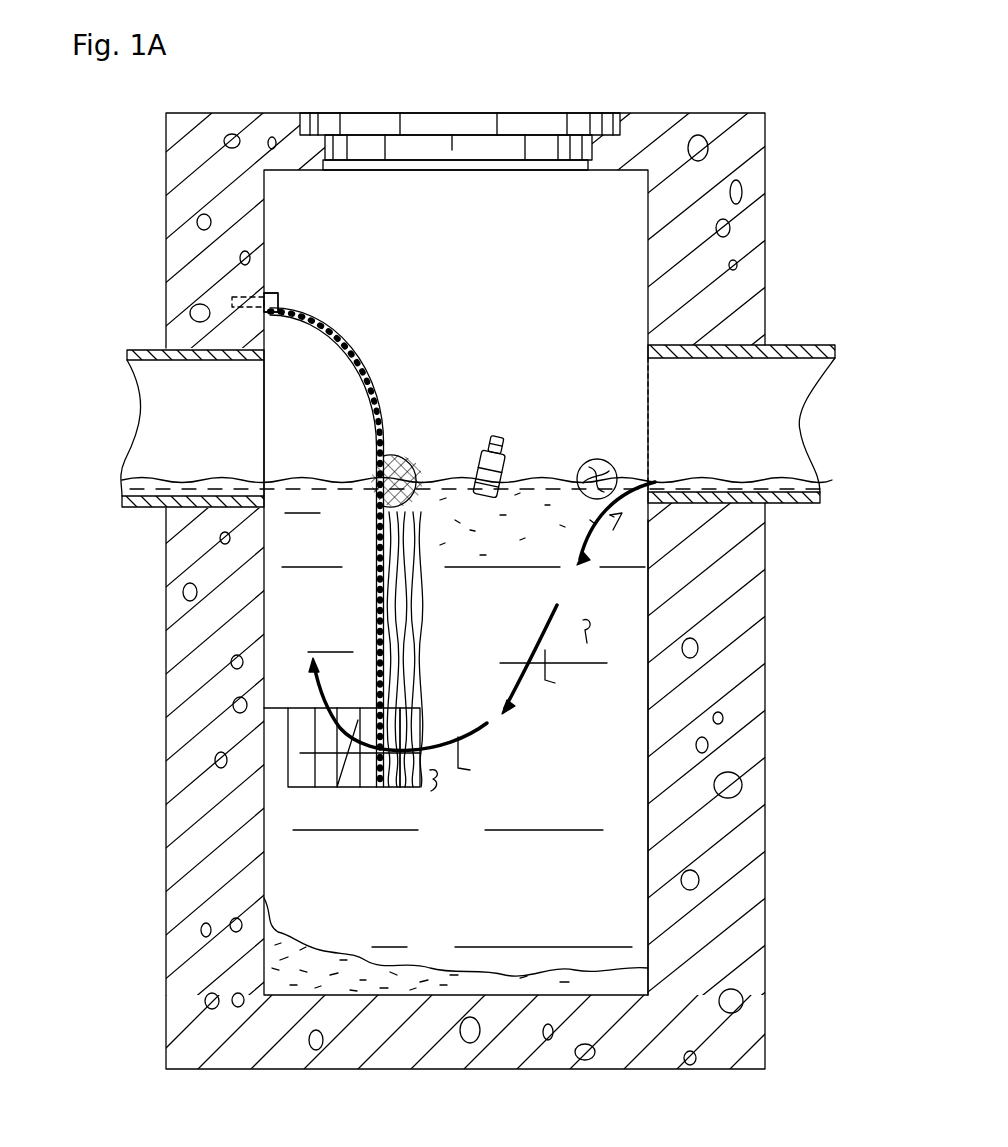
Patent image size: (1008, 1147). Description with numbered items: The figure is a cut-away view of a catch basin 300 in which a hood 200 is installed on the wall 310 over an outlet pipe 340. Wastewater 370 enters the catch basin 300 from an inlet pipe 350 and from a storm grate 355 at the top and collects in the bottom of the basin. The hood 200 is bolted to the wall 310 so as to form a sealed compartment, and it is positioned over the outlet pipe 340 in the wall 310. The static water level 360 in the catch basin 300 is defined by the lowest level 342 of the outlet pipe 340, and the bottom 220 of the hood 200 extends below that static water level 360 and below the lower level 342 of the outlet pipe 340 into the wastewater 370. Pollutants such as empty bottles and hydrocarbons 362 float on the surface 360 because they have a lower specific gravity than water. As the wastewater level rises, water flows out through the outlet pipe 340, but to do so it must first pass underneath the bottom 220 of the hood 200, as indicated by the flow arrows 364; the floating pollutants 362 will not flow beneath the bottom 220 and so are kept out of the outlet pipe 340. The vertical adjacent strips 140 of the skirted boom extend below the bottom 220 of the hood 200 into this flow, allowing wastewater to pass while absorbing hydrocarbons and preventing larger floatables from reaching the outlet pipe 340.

The catch basin 300 is at (716, 180).
The storm grate 355 is at (475, 177).
The outlet pipe 340 is at (157, 425).
The lowest level of the outlet pipe 342 is at (220, 503).
The inlet pipe 350 is at (730, 447).
The hood 200 is at (357, 353).
The wall 310 is at (265, 243).
The bottom of the hood 220 is at (337, 787).
The vertical adjacent strips 140 is at (402, 787).
The floating pollutants and hydrocarbons 362 is at (490, 490).
The static water level 360 is at (548, 477).
The arrows 364 is at (482, 634).
The wastewater 370 is at (523, 770).